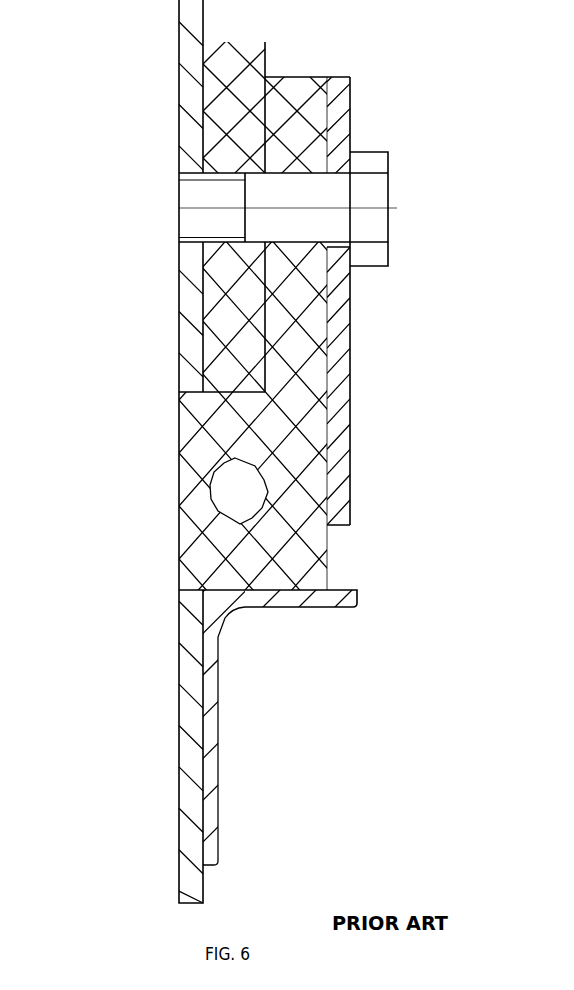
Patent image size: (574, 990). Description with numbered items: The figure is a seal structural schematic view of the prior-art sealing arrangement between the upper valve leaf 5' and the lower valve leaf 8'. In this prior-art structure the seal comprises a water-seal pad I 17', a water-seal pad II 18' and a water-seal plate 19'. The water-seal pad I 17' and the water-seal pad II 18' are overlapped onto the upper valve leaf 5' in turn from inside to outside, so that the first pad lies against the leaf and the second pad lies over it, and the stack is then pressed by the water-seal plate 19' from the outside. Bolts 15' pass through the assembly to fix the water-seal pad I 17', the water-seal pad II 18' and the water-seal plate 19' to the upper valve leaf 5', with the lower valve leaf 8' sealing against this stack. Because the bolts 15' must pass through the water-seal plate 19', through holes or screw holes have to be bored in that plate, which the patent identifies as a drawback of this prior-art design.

The upper valve leaf 5' is at (114, 451).
The lower valve leaf 8' is at (209, 697).
The bolts 15' is at (337, 136).
The water-seal pad I 17' is at (287, 316).
The water-seal pad II 18' is at (287, 326).
The water-seal plate 19' is at (411, 279).